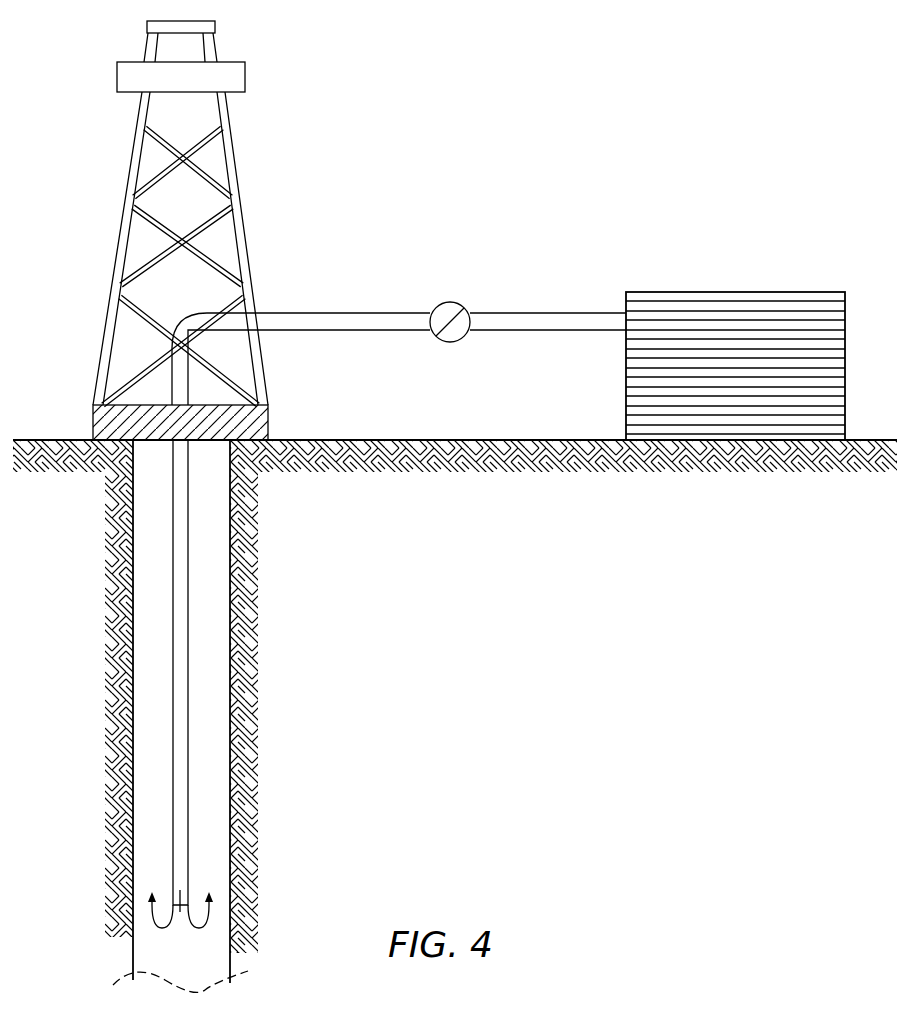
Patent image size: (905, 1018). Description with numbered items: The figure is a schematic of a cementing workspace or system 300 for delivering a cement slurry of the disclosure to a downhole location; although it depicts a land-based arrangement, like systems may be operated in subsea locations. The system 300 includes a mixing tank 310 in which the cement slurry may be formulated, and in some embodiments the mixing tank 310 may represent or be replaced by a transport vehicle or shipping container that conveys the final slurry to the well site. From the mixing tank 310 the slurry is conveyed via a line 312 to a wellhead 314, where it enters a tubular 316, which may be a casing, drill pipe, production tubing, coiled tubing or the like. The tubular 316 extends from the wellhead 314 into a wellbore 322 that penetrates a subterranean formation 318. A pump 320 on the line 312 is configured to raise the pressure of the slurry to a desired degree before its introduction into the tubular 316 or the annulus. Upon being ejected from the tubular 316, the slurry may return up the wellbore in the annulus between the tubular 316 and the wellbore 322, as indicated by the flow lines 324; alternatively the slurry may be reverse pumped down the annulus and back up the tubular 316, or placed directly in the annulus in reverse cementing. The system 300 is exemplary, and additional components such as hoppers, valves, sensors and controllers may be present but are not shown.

The cementing workspace or system 300 is at (608, 98).
The mixing tank 310 is at (727, 291).
The line 312 is at (358, 312).
The wellhead 314 is at (92, 424).
The tubular 316 is at (190, 592).
The subterranean formation 318 is at (89, 603).
The pump 320 is at (451, 301).
The wellbore 322 is at (232, 769).
The flow lines 324 is at (150, 921).